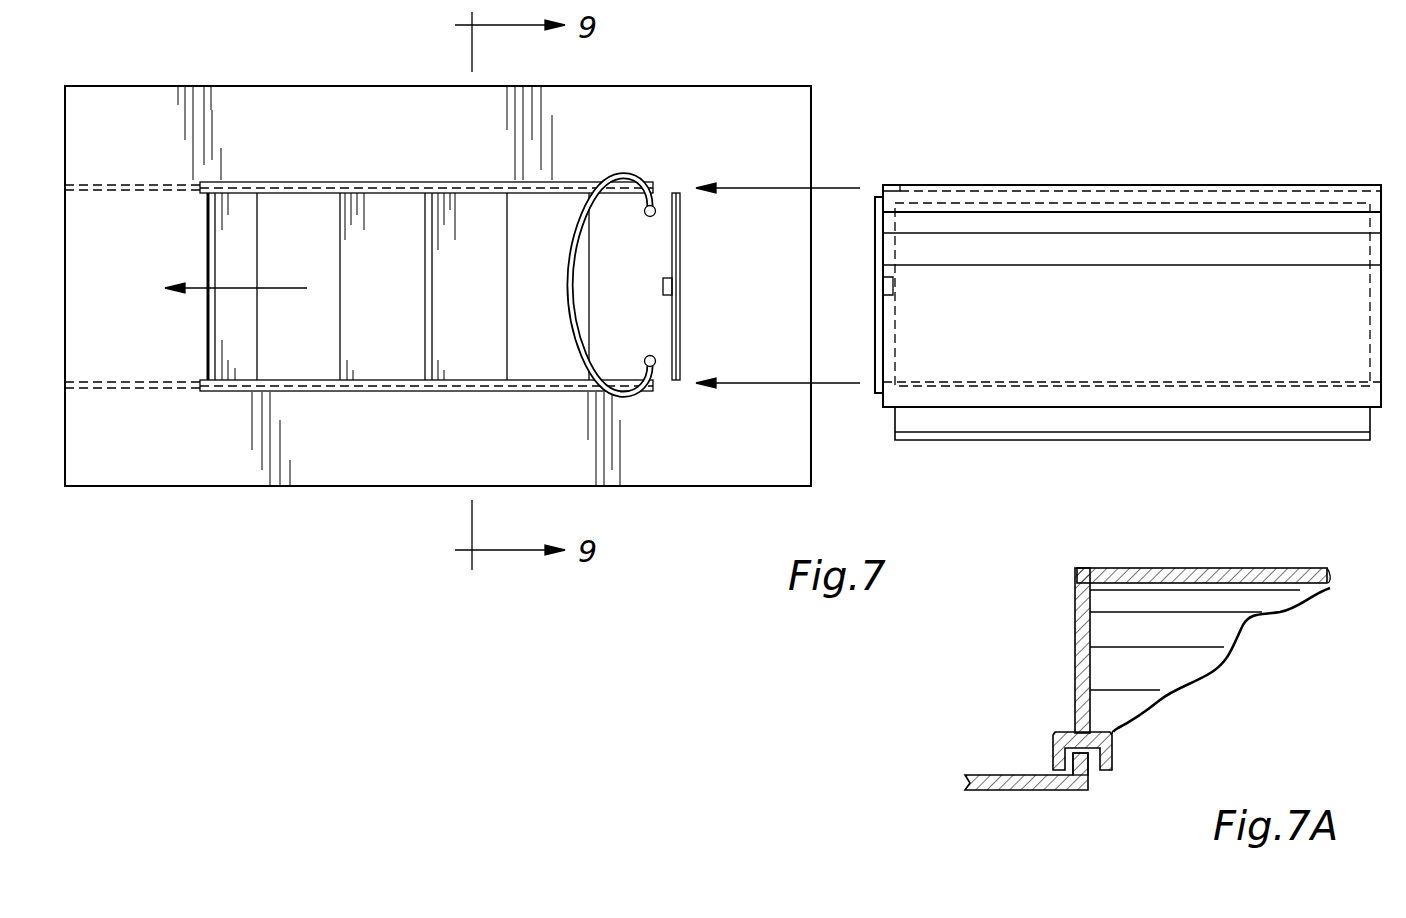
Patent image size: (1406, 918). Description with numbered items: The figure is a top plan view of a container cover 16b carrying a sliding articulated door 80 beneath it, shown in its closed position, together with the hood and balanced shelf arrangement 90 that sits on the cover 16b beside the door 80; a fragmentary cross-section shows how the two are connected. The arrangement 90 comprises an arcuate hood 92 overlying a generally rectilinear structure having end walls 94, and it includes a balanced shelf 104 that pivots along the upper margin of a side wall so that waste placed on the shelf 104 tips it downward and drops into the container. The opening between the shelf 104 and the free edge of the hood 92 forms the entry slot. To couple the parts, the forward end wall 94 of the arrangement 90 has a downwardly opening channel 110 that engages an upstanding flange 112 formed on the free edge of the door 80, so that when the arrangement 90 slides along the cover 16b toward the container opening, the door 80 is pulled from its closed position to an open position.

In FIG. 7, the cover 16b is at (372, 468).
In FIG. 7, the shelf 104 is at (352, 182).
In FIG. 7, the articulated door 80 is at (497, 320).
In FIG. 7A, the articulated door 80 is at (990, 777).
In FIG. 7, the downwardly opening channel 110 is at (880, 290).
In FIG. 7A, the downwardly opening channel 110 is at (1115, 742).
In FIG. 7, the hood and balanced shelf arrangement 90 is at (1076, 138).
In FIG. 7A, the hood and balanced shelf arrangement 90 is at (1135, 543).
In FIG. 7, the arcuate hood 92 is at (1230, 220).
In FIG. 7A, the arcuate hood 92 is at (1232, 595).
In FIG. 7A, the end wall 94 is at (1080, 646).
In FIG. 7A, the upstanding flange 112 is at (1084, 758).